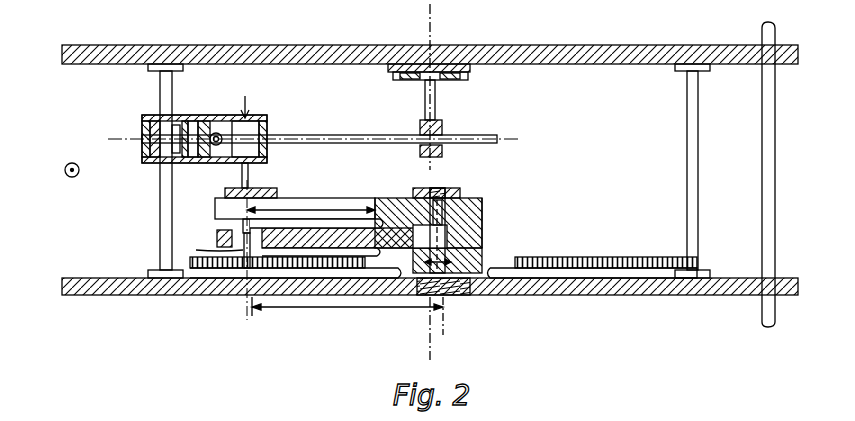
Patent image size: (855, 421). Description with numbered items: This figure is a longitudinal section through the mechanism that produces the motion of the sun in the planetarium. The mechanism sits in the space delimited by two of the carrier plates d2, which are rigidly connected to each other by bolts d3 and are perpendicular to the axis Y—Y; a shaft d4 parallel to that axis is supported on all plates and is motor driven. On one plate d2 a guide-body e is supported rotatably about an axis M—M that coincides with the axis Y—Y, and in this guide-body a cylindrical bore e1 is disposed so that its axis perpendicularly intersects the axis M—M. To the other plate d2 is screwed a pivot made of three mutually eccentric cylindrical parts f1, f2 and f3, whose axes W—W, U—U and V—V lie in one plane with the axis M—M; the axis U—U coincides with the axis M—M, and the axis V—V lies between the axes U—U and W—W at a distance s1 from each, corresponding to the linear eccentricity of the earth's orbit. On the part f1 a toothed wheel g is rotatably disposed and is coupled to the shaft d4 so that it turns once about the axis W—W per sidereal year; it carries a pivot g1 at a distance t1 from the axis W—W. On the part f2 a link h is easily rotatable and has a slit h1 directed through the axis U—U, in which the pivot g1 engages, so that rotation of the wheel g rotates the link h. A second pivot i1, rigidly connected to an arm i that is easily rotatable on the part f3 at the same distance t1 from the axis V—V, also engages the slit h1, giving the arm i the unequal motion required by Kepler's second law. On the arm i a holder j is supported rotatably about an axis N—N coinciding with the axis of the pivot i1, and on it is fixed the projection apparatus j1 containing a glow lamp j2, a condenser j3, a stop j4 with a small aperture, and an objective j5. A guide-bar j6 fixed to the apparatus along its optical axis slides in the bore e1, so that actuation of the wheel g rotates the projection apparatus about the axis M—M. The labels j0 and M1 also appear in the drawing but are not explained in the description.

The plates d2 is at (598, 308).
The bolts d3 is at (687, 190).
The shaft d4 is at (762, 211).
The axis M— M is at (429, 87).
The guide-body e is at (442, 125).
The cylindrical bore e1 is at (420, 152).
The guide-bar j6 is at (358, 135).
The holder j is at (250, 170).
The projection apparatus j1 is at (148, 115).
The objective j5 is at (142, 150).
The stop j4 is at (186, 118).
The condenser j3 is at (214, 121).
The bearing sleeve j0 is at (193, 160).
The glow lamp j2 is at (206, 160).
The axis N— N is at (218, 163).
The arm i is at (365, 198).
The distance t1 is at (345, 256).
The second pivot i1 is at (243, 224).
The pivot g1 is at (258, 270).
The link h is at (312, 228).
The slit h1 is at (265, 240).
The pivot part f1 is at (470, 252).
The pivot part f2 is at (482, 228).
The pivot part f3 is at (478, 198).
The axis V— V is at (437, 178).
The axis U— U is at (413, 200).
The axis W— W is at (448, 297).
The axis Y— Y is at (430, 330).
The pin M1 is at (433, 188).
The distance s1 is at (425, 297).
The toothed wheel g is at (636, 257).